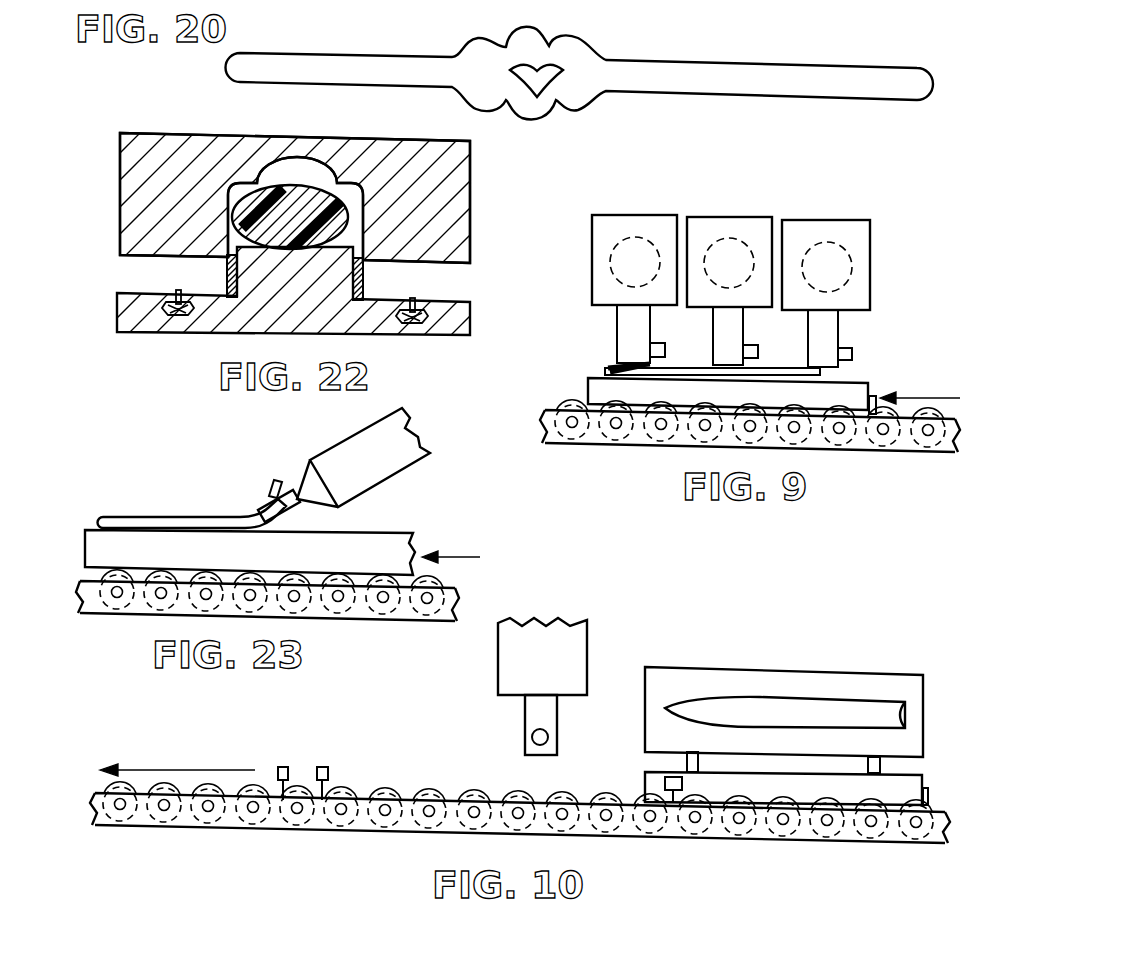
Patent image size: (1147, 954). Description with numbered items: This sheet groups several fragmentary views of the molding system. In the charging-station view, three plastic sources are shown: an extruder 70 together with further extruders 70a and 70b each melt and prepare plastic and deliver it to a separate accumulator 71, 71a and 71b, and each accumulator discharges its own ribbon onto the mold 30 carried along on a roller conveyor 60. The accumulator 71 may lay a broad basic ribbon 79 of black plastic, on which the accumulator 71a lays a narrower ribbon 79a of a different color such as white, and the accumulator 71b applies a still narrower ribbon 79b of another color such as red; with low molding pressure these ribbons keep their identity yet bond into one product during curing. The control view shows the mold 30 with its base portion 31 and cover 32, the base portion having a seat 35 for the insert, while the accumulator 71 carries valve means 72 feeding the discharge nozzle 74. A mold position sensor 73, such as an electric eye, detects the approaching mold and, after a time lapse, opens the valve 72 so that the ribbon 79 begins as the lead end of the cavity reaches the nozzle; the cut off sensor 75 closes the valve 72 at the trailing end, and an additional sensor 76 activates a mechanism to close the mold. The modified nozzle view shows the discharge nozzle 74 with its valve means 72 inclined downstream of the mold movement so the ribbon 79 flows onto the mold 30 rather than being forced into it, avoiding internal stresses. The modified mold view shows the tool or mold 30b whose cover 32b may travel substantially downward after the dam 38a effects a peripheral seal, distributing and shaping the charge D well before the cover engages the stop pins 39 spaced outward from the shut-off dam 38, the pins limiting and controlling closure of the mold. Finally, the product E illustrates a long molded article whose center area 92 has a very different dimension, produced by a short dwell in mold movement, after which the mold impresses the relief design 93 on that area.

In FIG. 20, the product E is at (745, 62).
In FIG. 20, the center area 92 is at (461, 45).
In FIG. 20, the relief design 93 is at (549, 55).
In FIG. 22, the charge D is at (253, 197).
In FIG. 22, the cover 32b is at (472, 190).
In FIG. 22, the mold 30b is at (476, 246).
In FIG. 22, the shut-off dam 38 is at (226, 277).
In FIG. 22, the dam 38a is at (365, 279).
In FIG. 22, the stop pins 39 is at (176, 316).
In FIG. 9, the extruder 70 is at (832, 245).
In FIG. 9, the extruder 70a is at (732, 240).
In FIG. 9, the extruder 70b is at (637, 238).
In FIG. 9, the accumulator 71 is at (819, 220).
In FIG. 10, the accumulator 71 is at (577, 648).
In FIG. 9, the accumulator 71a is at (706, 217).
In FIG. 9, the accumulator 71b is at (603, 215).
In FIG. 9, the ribbon 79 is at (828, 372).
In FIG. 23, the ribbon 79 is at (160, 516).
In FIG. 9, the ribbon 79a is at (787, 337).
In FIG. 9, the ribbon 79b is at (650, 372).
In FIG. 9, the mold 30 is at (868, 381).
In FIG. 23, the mold 30 is at (392, 530).
In FIG. 10, the mold 30 is at (756, 699).
In FIG. 9, the roller conveyor 60 is at (933, 458).
In FIG. 10, the roller conveyor 60 is at (856, 848).
In FIG. 23, the discharge nozzle 74 is at (268, 500).
In FIG. 10, the discharge nozzle 74 is at (525, 710).
In FIG. 23, the valve means 72 is at (274, 481).
In FIG. 10, the valve means 72 is at (531, 737).
In FIG. 10, the base portion 31 is at (643, 780).
In FIG. 10, the cover 32 is at (818, 678).
In FIG. 10, the seat 35 is at (867, 703).
In FIG. 10, the mold position sensor 73 is at (684, 784).
In FIG. 10, the cut off sensor 75 is at (323, 765).
In FIG. 10, the additional sensor 76 is at (279, 765).